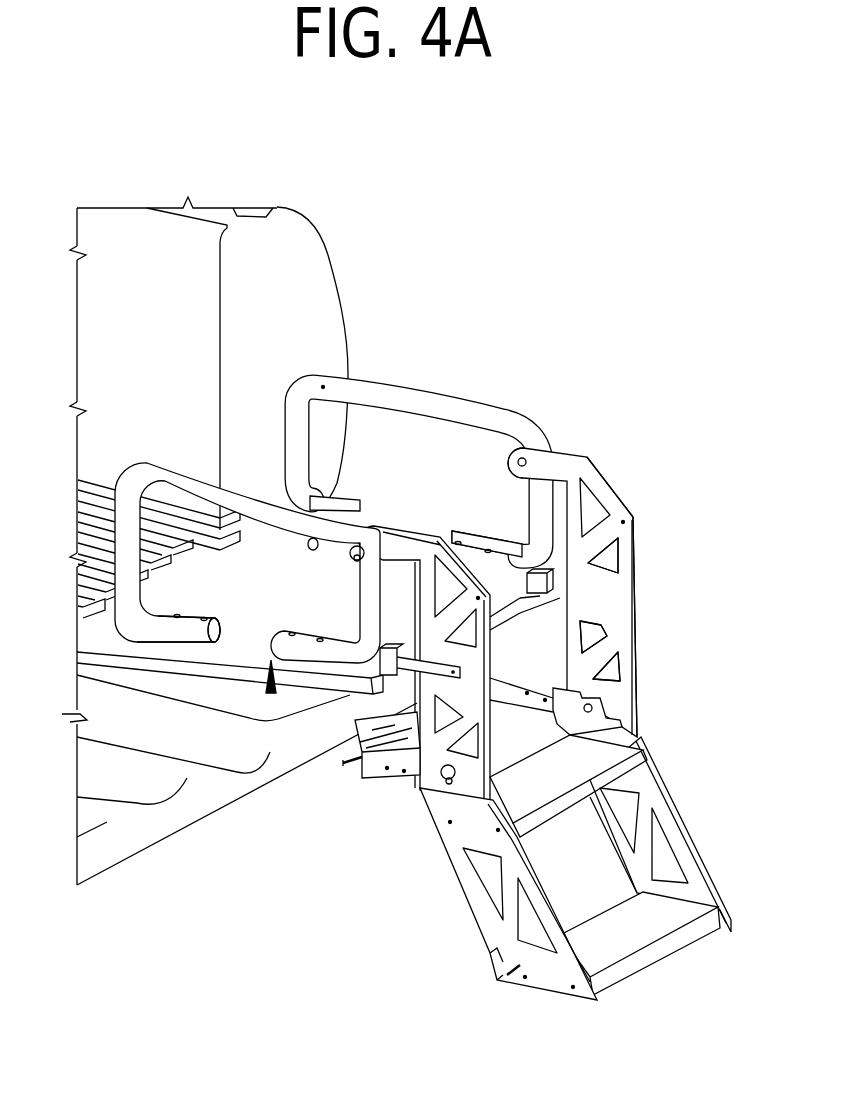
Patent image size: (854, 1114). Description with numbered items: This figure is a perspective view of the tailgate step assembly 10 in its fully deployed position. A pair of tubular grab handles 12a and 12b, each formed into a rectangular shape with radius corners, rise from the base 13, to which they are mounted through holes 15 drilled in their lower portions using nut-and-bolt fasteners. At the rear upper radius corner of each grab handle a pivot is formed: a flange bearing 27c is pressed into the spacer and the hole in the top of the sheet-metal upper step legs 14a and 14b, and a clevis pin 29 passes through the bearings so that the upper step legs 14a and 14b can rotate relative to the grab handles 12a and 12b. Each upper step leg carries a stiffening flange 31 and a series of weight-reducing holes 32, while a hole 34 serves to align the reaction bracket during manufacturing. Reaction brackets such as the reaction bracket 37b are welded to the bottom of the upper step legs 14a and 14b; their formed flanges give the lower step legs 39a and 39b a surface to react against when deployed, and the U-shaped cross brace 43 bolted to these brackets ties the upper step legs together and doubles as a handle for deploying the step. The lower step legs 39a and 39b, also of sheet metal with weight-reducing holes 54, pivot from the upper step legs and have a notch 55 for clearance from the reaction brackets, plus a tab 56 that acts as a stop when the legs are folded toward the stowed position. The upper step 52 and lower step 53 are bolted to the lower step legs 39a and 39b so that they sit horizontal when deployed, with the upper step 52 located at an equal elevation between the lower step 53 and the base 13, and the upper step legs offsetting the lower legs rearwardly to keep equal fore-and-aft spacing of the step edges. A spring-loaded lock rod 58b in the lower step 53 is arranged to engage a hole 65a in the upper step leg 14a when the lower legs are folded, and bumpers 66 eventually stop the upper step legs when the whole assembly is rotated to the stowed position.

The tailgate step assembly 10 is at (271, 693).
The tubular grab handle 12a is at (347, 383).
The tubular grab handle 12b is at (137, 478).
The base 13 is at (253, 640).
The upper step leg 14a is at (613, 588).
The upper step leg 14b is at (490, 867).
The holes 15 is at (177, 615).
The flange bearing 27c is at (528, 458).
The clevis pin 29 is at (524, 458).
The flange 31 is at (628, 468).
The holes 32 is at (612, 556).
The hole 34 is at (597, 597).
The reaction bracket 37b is at (397, 783).
The lower step leg 39a is at (673, 800).
The lower step leg 39b is at (463, 903).
The cross brace 43 is at (370, 768).
The upper step 52 is at (642, 748).
The lower step 53 is at (650, 955).
The holes 54 is at (627, 808).
The notch 55 is at (622, 723).
The tab 56 is at (497, 972).
The lock rod 58b is at (512, 985).
The hole 65a is at (640, 515).
The bumpers 66 is at (360, 545).